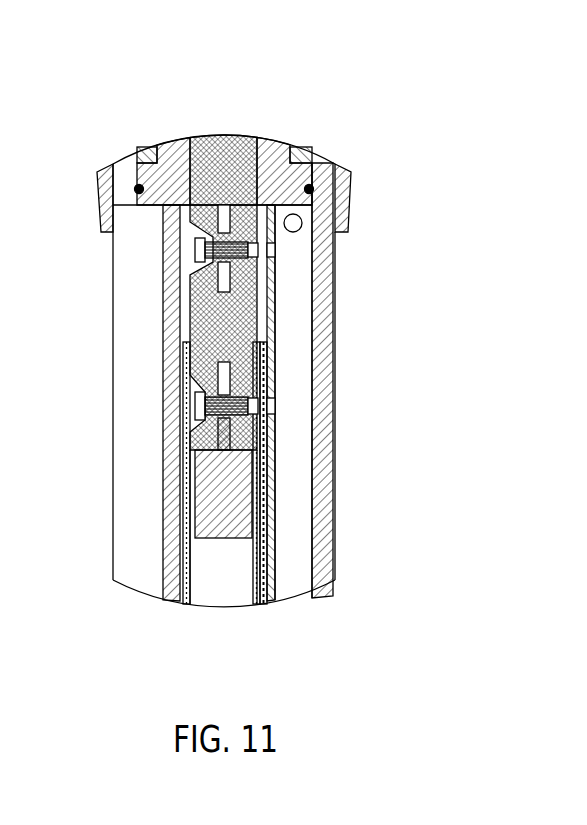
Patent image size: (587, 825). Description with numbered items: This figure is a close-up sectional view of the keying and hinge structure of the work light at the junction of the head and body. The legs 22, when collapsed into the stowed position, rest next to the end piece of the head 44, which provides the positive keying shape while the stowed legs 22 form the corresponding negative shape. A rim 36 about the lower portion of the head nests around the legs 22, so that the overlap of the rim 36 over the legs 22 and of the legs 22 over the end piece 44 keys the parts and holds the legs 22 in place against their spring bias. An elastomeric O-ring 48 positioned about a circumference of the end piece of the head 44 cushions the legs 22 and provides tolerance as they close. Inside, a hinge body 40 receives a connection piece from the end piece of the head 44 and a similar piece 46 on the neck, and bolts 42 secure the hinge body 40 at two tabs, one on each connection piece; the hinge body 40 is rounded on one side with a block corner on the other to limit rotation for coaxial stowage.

The legs 22 is at (296, 350).
The rim 36 is at (100, 218).
The hinge body 40 is at (213, 318).
The bolts 42 is at (192, 263).
The end piece of the head 44 is at (272, 147).
The connection piece on the neck 46 is at (223, 520).
The O-ring 48 is at (139, 189).